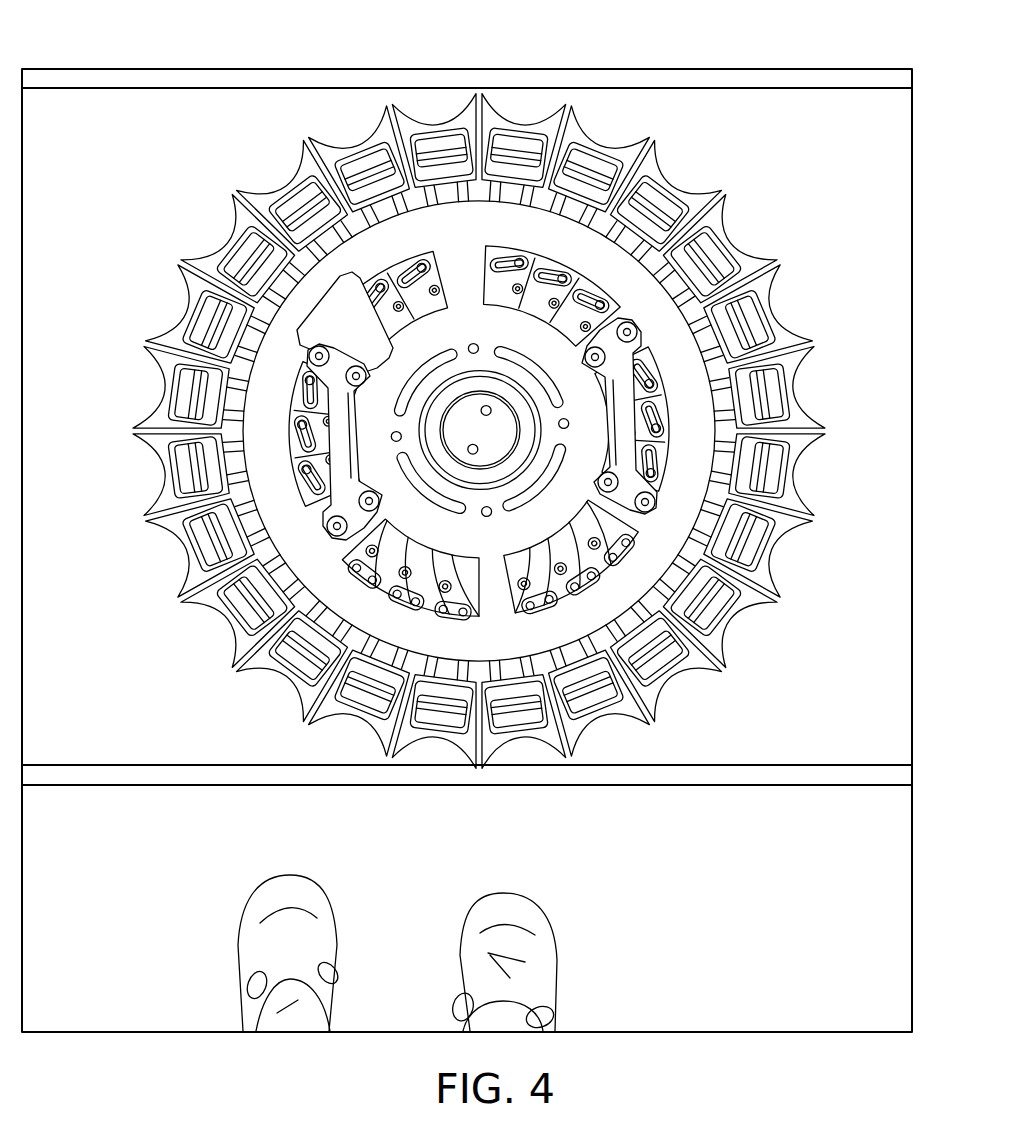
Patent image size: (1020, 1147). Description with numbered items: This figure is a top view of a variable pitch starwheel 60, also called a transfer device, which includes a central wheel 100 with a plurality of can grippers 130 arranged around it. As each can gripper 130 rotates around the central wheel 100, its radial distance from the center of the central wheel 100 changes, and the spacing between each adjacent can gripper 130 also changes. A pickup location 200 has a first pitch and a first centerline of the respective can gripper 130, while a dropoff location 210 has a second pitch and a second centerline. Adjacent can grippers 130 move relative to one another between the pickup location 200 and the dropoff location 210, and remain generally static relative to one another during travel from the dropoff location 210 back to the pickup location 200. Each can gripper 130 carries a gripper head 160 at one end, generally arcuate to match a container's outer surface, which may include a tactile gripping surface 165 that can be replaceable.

The starwheel 60 is at (809, 297).
The central wheel 100 is at (670, 350).
The can gripper 130 is at (793, 413).
The gripper head 160 is at (785, 517).
The tactile gripping surface 165 is at (735, 612).
The pickup location 200 is at (650, 240).
The dropoff location 210 is at (298, 670).